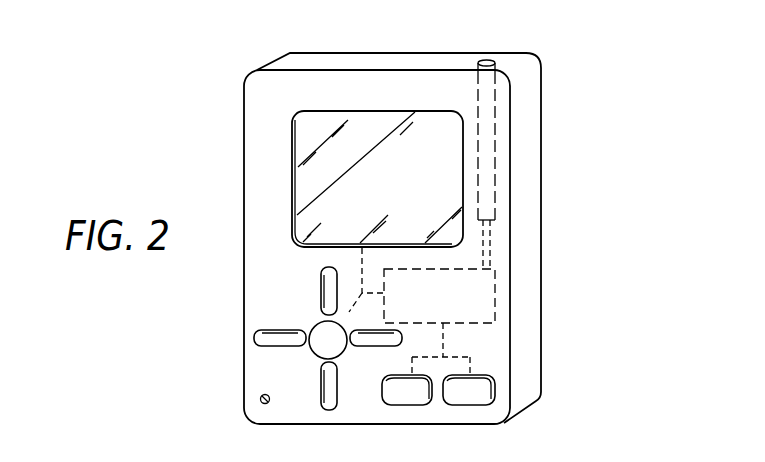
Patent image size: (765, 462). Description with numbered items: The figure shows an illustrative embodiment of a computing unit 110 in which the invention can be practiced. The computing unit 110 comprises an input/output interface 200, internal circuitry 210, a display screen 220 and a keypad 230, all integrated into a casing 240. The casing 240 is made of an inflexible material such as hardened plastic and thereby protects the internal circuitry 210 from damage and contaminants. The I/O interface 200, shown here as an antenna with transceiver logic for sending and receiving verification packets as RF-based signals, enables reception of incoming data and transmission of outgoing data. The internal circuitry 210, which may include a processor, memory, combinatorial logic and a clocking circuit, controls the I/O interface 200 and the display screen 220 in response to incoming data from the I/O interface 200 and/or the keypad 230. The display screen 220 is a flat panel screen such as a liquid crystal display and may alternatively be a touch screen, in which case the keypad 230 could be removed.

The computing unit 110 is at (215, 137).
The input/output (I/O) interface 200 is at (496, 165).
The internal circuitry 210 is at (495, 323).
The display screen 220 is at (317, 187).
The keypad 230 is at (283, 371).
The casing 240 is at (527, 284).